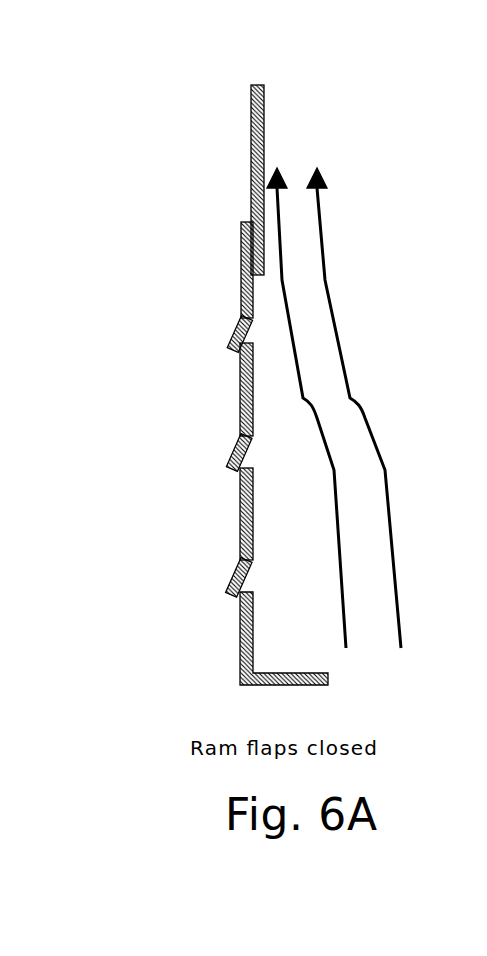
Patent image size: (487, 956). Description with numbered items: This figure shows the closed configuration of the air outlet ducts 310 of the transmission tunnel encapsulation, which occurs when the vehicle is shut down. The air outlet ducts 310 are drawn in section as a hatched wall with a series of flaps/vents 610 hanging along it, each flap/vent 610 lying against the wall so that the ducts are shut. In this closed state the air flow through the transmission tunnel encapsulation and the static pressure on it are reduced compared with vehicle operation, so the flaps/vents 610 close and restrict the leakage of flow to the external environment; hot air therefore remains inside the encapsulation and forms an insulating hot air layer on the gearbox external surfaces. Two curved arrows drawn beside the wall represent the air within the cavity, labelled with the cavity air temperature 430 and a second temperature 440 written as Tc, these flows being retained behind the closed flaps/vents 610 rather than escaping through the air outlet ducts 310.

The air outlet ducts 310 is at (253, 143).
The flaps/vents 610 is at (233, 328).
The cold air flow Tc 440 is at (150, 498).
The air temperature of the cavity within the encapsulation 430 is at (405, 380).